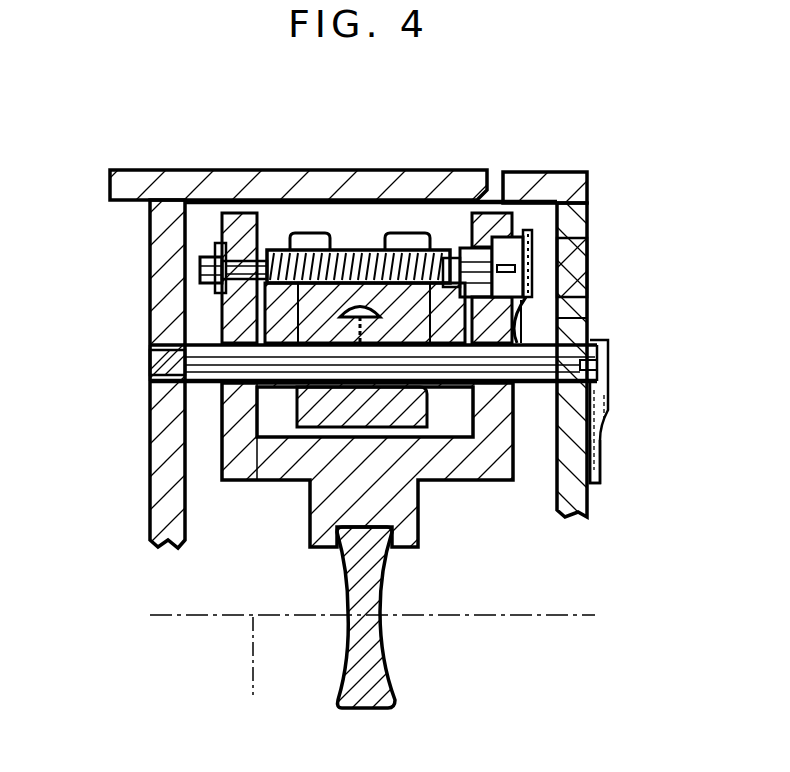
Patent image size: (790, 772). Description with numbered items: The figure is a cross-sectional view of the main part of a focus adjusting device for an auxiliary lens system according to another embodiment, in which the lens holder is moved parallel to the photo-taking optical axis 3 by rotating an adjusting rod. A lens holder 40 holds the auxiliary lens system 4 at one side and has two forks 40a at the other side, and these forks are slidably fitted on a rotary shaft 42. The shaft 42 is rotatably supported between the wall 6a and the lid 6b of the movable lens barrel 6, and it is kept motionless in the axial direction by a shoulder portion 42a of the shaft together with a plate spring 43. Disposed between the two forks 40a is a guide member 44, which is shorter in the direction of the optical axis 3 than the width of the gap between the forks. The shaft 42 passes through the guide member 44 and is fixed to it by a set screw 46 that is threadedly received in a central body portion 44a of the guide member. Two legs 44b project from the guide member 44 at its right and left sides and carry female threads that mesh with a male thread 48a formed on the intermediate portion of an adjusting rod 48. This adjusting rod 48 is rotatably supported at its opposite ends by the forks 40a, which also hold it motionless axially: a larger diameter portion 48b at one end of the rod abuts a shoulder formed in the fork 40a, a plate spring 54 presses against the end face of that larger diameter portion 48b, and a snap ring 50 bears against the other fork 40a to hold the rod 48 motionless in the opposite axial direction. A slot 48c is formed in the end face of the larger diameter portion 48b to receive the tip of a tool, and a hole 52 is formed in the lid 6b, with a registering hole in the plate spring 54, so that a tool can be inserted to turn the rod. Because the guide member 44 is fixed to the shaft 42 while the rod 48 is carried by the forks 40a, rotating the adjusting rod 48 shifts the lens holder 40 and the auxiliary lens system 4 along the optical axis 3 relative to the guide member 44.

The photo-taking optical axis 3 is at (248, 677).
The auxiliary lens system 4 is at (377, 670).
The movable lens barrel 6 is at (138, 188).
The wall 6a is at (165, 247).
The lid 6b is at (580, 497).
The lens holder 40 is at (402, 510).
The forks 40a is at (235, 405).
The rotary shaft 42 is at (183, 342).
The shoulder portion 42a is at (160, 362).
The plate spring 43 is at (608, 390).
The guide member 44 is at (418, 400).
The central body portion 44a is at (318, 415).
The legs 44b is at (303, 243).
The set screw 46 is at (333, 250).
The adjusting rod 48 is at (237, 267).
The male thread 48a is at (380, 250).
The larger diameter portion 48b is at (518, 238).
The slot 48c is at (535, 267).
The snap ring 50 is at (195, 283).
The hole 52 is at (575, 281).
The plate spring 54 is at (535, 320).